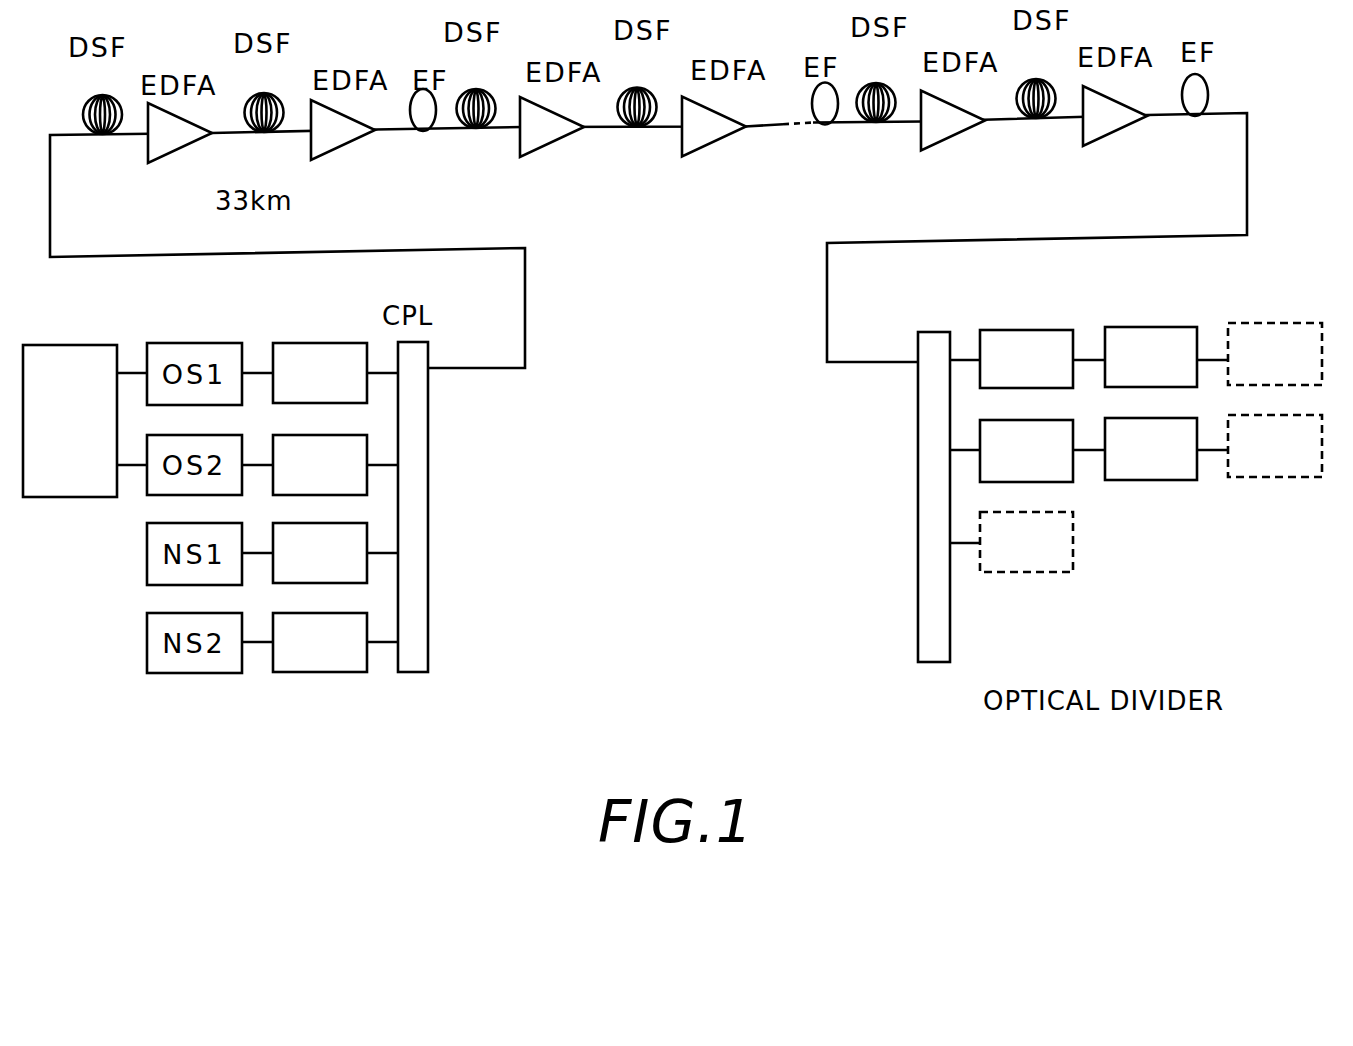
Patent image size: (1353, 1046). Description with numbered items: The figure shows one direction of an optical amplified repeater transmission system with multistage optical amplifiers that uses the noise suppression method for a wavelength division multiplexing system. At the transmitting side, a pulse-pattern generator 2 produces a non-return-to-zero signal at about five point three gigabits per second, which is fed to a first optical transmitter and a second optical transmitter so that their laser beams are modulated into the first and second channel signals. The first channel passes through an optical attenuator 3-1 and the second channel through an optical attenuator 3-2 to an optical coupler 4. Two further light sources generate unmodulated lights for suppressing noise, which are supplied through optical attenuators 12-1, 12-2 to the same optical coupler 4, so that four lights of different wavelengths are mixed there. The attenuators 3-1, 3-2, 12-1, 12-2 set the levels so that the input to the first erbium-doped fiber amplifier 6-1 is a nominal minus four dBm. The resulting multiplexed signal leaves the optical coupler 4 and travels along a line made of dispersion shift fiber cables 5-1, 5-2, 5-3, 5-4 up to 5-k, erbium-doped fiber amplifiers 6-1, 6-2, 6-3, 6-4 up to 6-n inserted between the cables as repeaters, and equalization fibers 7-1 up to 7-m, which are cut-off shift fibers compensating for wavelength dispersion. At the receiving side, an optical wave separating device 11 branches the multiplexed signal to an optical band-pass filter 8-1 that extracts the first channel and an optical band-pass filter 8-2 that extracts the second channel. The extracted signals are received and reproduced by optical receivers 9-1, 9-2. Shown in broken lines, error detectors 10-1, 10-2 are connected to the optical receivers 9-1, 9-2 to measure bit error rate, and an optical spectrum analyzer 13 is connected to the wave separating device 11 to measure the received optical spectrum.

The pulse-pattern generator 2 is at (75, 497).
The optical attenuator 3-1 is at (297, 343).
The optical attenuator 3-2 is at (310, 420).
The optical coupler 4 is at (430, 462).
The dispersion shift fiber 5-1 is at (95, 136).
The dispersion shift fiber 5-2 is at (258, 132).
The dispersion shift fiber 5-3 is at (470, 128).
The dispersion shift fiber 5-4 is at (625, 126).
The dispersion shift fiber 5-k is at (1025, 118).
The erbium-doped fiber amplifier 6-1 is at (167, 163).
The erbium-doped fiber amplifier 6-2 is at (338, 160).
The erbium-doped fiber amplifier 6-3 is at (553, 157).
The erbium-doped fiber amplifier 6-4 is at (702, 154).
The erbium-doped fiber amplifier 6-n is at (1100, 145).
The equalization fiber 7-1 is at (417, 129).
The equalization fiber 7-m is at (1193, 113).
The optical band-pass filter 8-1 is at (1013, 330).
The optical band-pass filter 8-2 is at (1013, 420).
The optical receiver 9-1 is at (1135, 327).
The optical receiver 9-2 is at (1135, 418).
The error detector 10-1 is at (1240, 325).
The error detector 10-2 is at (1240, 477).
The optical wave separating device 11 is at (932, 662).
The optical attenuator 12-1 is at (302, 509).
The optical attenuator 12-2 is at (290, 613).
The optical spectrum analyzer 13 is at (1073, 525).